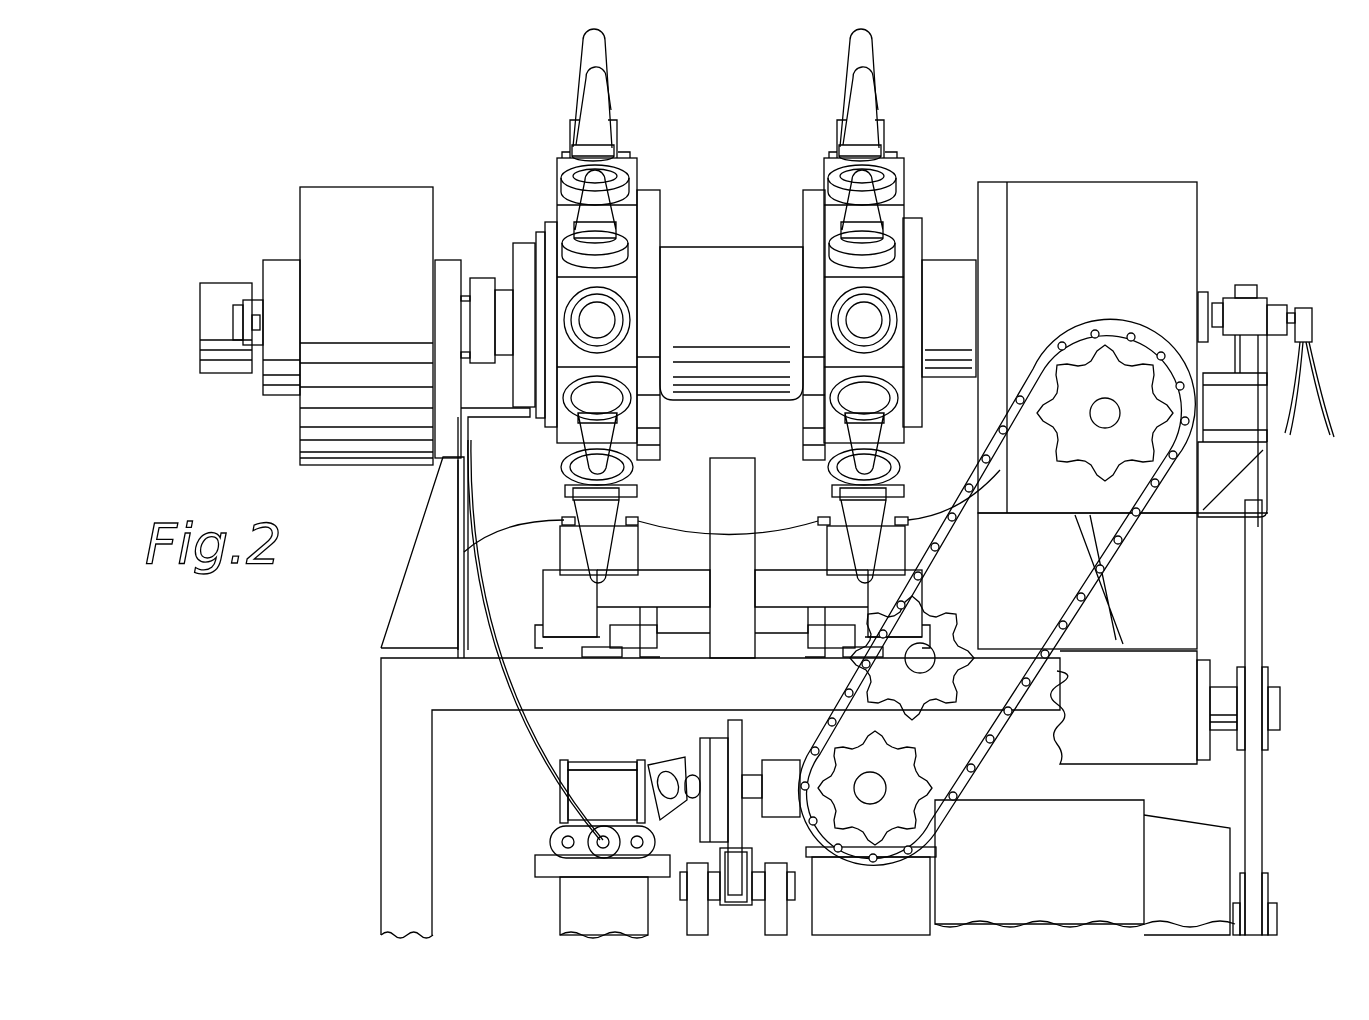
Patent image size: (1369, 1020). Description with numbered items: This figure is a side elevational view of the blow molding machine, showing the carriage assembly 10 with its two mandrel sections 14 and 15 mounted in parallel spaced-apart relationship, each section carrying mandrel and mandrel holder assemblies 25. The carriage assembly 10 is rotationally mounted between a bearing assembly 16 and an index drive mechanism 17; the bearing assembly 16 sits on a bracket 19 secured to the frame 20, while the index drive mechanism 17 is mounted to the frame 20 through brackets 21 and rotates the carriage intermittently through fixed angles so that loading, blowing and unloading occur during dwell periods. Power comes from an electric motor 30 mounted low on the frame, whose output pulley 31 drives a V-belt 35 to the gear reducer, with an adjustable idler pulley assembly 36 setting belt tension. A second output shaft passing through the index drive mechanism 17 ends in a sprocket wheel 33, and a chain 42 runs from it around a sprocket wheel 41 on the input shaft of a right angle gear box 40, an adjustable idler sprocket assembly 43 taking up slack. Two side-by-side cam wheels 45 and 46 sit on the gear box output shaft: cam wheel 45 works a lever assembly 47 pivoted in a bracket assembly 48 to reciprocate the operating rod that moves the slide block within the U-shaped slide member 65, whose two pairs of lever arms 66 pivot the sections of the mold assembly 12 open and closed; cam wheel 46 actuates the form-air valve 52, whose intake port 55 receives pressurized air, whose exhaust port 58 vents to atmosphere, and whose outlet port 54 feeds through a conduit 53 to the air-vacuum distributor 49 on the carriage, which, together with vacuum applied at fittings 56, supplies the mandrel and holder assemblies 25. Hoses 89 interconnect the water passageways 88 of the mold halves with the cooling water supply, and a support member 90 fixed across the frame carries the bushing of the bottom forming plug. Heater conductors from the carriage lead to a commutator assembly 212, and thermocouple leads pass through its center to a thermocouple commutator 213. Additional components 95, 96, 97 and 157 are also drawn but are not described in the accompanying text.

The carriage assembly 10 is at (757, 247).
The mold assembly 12 is at (557, 548).
The mandrel section 14 is at (642, 157).
The mandrel section 15 is at (818, 160).
The bearing assembly 16 is at (445, 260).
The index drive mechanism 17 is at (1072, 190).
The bracket 19 is at (400, 574).
The frame 20 is at (378, 748).
The brackets 21 is at (1170, 588).
The mandrel and mandrel holder assemblies 25 is at (645, 250).
The electric motor 30 is at (1000, 862).
The pulley 31 is at (1270, 890).
The sprocket wheel 33 is at (1062, 432).
The V-belt 35 is at (1262, 800).
The idler pulley assembly 36 is at (1270, 685).
The right angle gear box 40 is at (774, 760).
The sprocket wheel 41 is at (905, 756).
The chain 42 is at (992, 718).
The adjustable idler sprocket assembly 43 is at (935, 625).
The cam wheel 45 is at (728, 703).
The cam wheel 46 is at (700, 745).
The lever assembly 47 is at (738, 903).
The bracket assembly 48 is at (775, 863).
The air-vacuum distributor 49 is at (522, 243).
The form-air valve 52 is at (580, 761).
The conduit 53 is at (510, 740).
The outlet port 54 is at (600, 853).
The intake port 55 is at (637, 853).
The fittings 56 is at (489, 278).
The exhaust port 58 is at (548, 842).
The U-shaped slide member 65 is at (728, 458).
The lever arms 66 is at (685, 598).
The water passageway 88 is at (562, 517).
The hoses 89 is at (774, 520).
The support member 90 is at (610, 655).
The wire 95 is at (1292, 428).
The wire 96 is at (1312, 403).
The switch 97 is at (1226, 298).
The bracket 157 is at (472, 420).
The commutator assembly 212 is at (354, 187).
The thermocouple commutator 213 is at (225, 283).